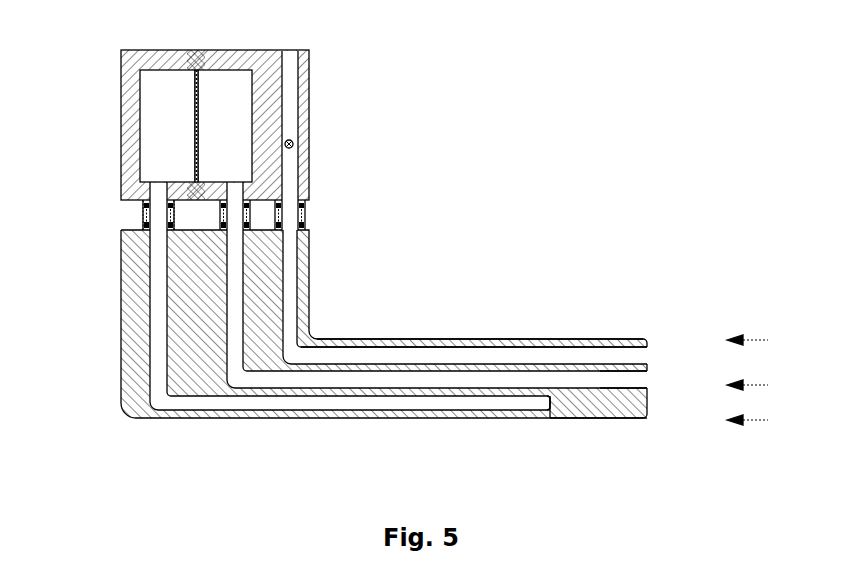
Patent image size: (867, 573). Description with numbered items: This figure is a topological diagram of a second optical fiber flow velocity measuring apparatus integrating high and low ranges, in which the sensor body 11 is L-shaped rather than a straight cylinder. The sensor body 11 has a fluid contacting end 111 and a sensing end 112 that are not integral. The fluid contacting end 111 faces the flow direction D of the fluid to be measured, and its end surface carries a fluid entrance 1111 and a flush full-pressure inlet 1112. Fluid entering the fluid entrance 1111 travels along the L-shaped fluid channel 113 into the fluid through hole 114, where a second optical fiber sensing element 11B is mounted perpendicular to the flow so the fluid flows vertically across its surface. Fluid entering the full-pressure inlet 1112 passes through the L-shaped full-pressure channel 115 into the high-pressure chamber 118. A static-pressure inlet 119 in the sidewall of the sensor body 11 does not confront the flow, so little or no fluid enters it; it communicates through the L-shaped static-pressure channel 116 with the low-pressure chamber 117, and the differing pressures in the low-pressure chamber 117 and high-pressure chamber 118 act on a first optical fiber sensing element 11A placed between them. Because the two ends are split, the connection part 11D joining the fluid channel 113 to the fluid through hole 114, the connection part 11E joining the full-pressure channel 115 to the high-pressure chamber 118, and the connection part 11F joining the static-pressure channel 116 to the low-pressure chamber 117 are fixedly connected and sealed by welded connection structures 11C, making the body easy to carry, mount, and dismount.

The sensor body 11 is at (127, 384).
The fluid contacting end 111 is at (622, 406).
The fluid entrance 1111 is at (646, 360).
The full-pressure inlet 1112 is at (645, 370).
The sensing end 112 is at (133, 62).
The fluid channel 113 is at (550, 352).
The fluid through hole 114 is at (293, 97).
The full-pressure channel 115 is at (449, 390).
The static-pressure channel 116 is at (343, 400).
The low-pressure chamber 117 is at (157, 110).
The high-pressure chamber 118 is at (232, 90).
The static-pressure inlet 119 is at (549, 414).
The first optical fiber sensing element 11A is at (193, 85).
The second optical fiber sensing element 11B is at (293, 143).
The connection structures 11C is at (143, 212).
The connection part 11D is at (305, 226).
The connection part 11E is at (222, 224).
The connection part 11F is at (143, 222).
The flow direction D is at (761, 380).